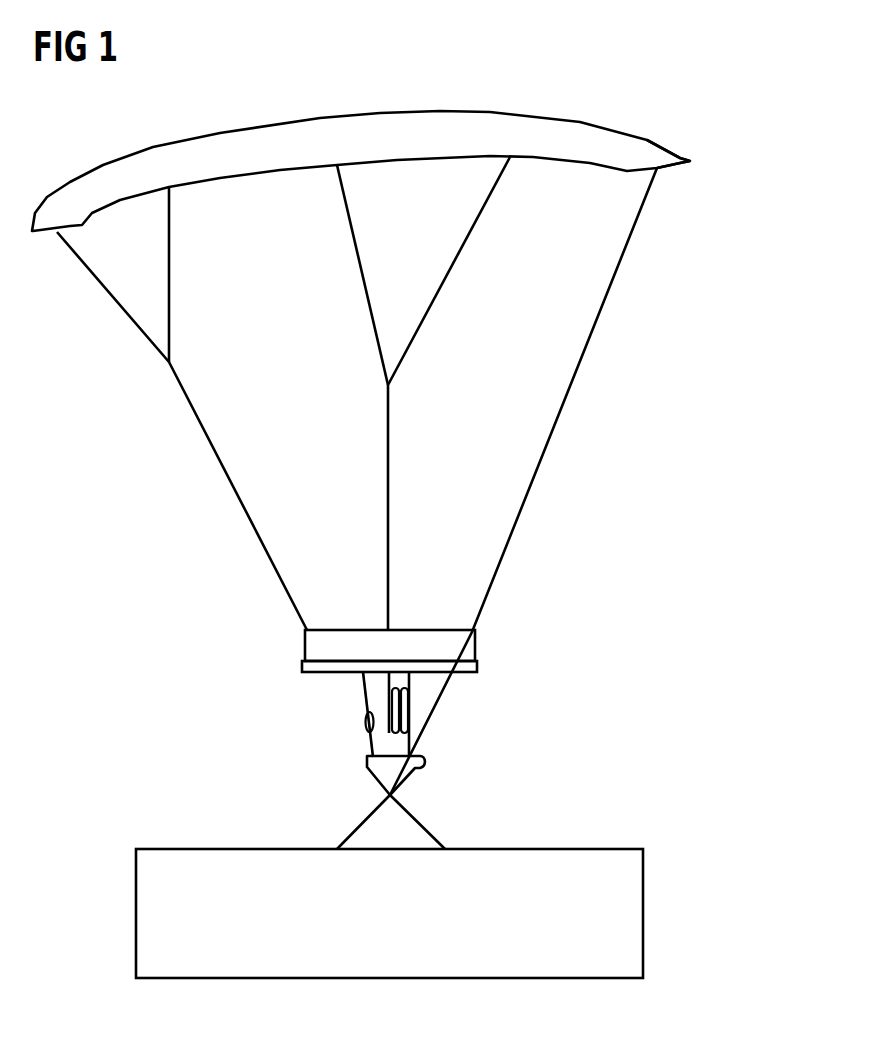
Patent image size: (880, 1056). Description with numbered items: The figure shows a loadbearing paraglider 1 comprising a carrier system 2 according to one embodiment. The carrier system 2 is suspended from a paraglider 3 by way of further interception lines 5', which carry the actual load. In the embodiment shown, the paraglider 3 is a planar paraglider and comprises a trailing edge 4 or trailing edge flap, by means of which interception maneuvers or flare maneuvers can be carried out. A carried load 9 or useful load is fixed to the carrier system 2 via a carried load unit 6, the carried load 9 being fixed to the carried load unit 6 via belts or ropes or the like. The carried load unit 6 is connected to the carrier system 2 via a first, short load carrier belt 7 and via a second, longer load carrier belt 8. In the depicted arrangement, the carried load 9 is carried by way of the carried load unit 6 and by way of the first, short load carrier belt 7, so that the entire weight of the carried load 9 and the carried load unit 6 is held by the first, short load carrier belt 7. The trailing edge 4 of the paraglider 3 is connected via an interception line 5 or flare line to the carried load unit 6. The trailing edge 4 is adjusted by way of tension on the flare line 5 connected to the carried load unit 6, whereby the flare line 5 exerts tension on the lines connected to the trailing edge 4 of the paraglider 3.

The loadbearing paraglider 1 is at (173, 493).
The carrier system 2 is at (312, 648).
The paraglider 3 is at (284, 137).
The trailing edge 4 is at (690, 161).
The interception line 5 is at (523, 481).
The further interception lines 5' is at (278, 275).
The carried load unit 6 is at (393, 775).
The first, short load carrier belt 7 is at (367, 698).
The second, longer load carrier belt 8 is at (409, 708).
The carried load 9 is at (232, 860).